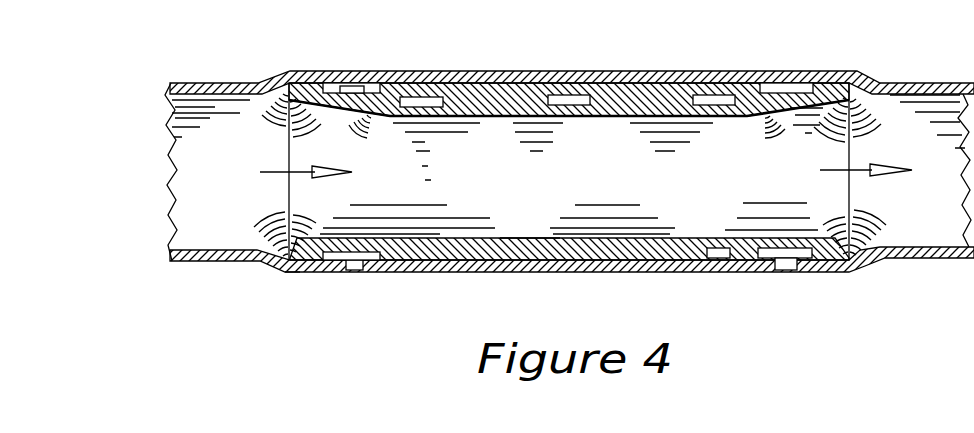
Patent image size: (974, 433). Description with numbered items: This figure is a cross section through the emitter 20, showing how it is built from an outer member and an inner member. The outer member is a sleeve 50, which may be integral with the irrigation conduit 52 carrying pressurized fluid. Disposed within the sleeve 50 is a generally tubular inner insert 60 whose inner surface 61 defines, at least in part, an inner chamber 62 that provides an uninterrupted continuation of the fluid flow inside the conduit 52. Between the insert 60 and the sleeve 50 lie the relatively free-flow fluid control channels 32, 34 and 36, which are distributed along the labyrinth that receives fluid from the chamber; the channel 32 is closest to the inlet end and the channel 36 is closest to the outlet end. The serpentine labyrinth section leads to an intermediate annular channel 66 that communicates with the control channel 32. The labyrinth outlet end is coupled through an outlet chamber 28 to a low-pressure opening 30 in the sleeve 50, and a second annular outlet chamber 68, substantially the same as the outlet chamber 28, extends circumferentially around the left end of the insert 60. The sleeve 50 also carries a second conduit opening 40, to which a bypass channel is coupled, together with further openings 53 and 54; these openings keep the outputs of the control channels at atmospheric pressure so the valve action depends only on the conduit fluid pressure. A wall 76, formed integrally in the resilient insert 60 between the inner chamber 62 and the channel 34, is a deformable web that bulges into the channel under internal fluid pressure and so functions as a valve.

The emitter 20 is at (250, 292).
The outlet line or chamber 28 is at (778, 90).
The low-pressure opening 30 is at (793, 72).
The fluid control channel 32 is at (725, 89).
The fluid control channel 34 is at (576, 83).
The fluid control channel 36 is at (428, 84).
The second conduit opening 40 is at (352, 83).
The sleeve 50 is at (563, 72).
The irrigation conduit 52 is at (213, 83).
The opening 53 is at (347, 273).
The opening 54 is at (791, 266).
The inner insert 60 is at (524, 226).
The inner surface 61 is at (498, 117).
The inner chamber 62 is at (562, 187).
The intermediate annular channel 66 is at (705, 246).
The second annular outlet chamber 68 is at (356, 92).
The wall 76 is at (571, 117).